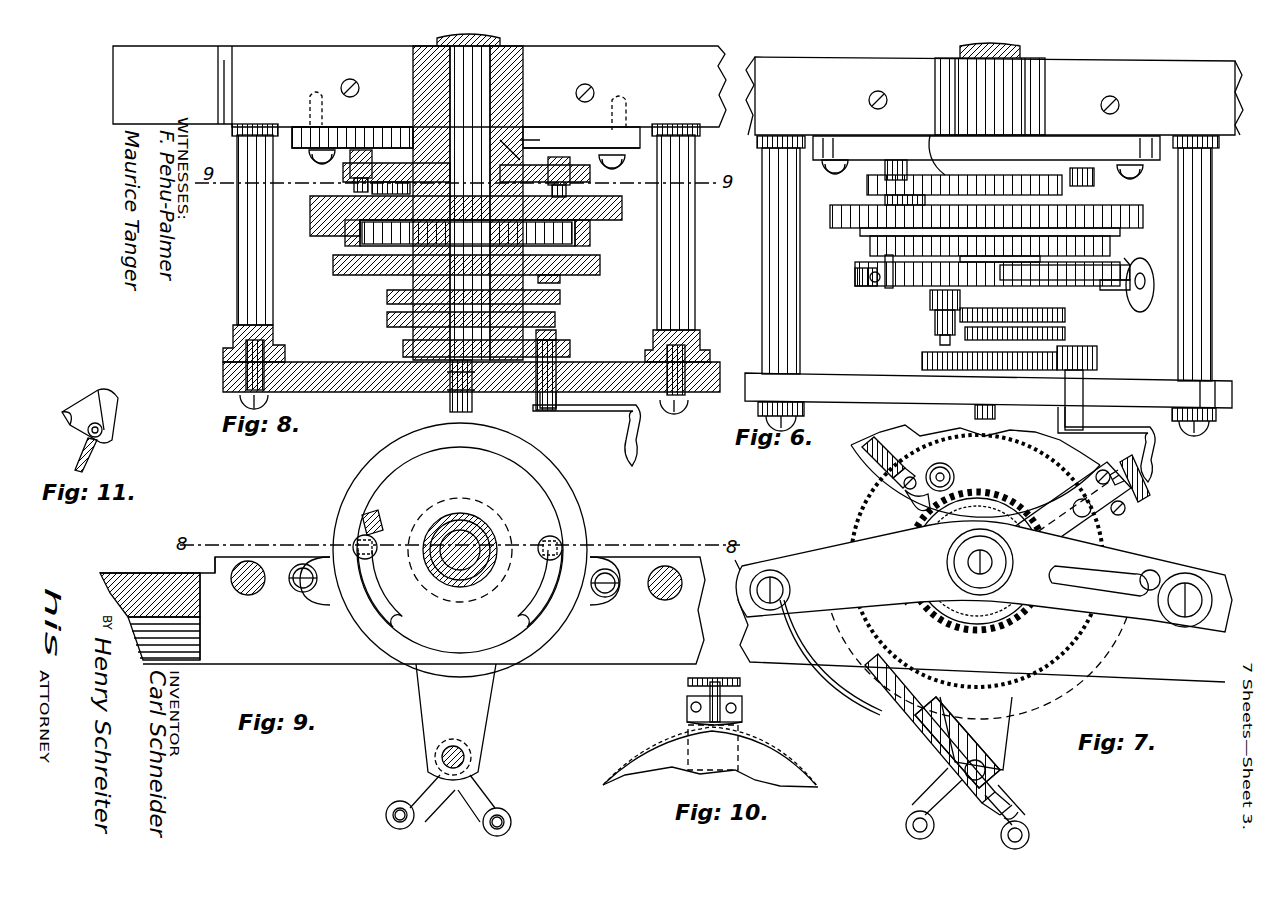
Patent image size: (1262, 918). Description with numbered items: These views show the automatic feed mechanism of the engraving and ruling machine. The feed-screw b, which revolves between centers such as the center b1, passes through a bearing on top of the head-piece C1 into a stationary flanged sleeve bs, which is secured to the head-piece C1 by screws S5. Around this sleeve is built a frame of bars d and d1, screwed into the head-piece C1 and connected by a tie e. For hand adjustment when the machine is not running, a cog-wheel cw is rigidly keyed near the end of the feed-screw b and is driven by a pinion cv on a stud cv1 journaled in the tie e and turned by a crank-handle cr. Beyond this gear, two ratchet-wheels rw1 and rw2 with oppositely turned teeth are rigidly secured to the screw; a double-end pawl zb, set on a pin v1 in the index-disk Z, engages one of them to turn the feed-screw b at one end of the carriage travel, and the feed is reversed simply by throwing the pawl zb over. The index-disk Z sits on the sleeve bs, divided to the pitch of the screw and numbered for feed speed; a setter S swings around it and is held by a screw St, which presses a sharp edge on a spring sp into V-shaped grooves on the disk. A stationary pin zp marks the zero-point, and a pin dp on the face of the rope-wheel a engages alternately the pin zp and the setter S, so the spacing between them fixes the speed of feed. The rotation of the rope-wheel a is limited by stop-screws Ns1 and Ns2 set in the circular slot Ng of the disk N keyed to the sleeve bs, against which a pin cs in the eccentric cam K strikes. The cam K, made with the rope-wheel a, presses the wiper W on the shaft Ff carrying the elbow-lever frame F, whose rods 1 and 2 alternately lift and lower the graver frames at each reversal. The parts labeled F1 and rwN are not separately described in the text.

In FIG. 8, the head-piece C1 is at (419, 88).
In FIG. 6, the head-piece C1 is at (994, 96).
In FIG. 8, the frame plate F1 is at (466, 140).
In FIG. 6, the frame plate F1 is at (862, 148).
In FIG. 9, the frame plate F1 is at (456, 722).
In FIG. 7, the frame plate F1 is at (976, 733).
In FIG. 8, the stationary flanged sleeve bs is at (525, 150).
In FIG. 6, the stationary flanged sleeve bs is at (925, 146).
In FIG. 8, the stop-screw Ns1 is at (378, 146).
In FIG. 6, the stop-screw Ns1 is at (905, 152).
In FIG. 9, the stop-screw Ns1 is at (355, 540).
In FIG. 8, the stop-screw Ns2 is at (566, 160).
In FIG. 6, the stop-screw Ns2 is at (1095, 156).
In FIG. 9, the stop-screw Ns2 is at (560, 545).
In FIG. 8, the screws S5 is at (332, 162).
In FIG. 6, the screws S5 is at (867, 182).
In FIG. 9, the screws S5 is at (303, 592).
In FIG. 8, the disk N is at (343, 172).
In FIG. 6, the disk N is at (964, 185).
In FIG. 9, the disk N is at (460, 550).
In FIG. 9, the circular slot Ng is at (460, 534).
In FIG. 8, the pin cs is at (391, 189).
In FIG. 6, the pin cs is at (910, 200).
In FIG. 9, the pin cs is at (366, 518).
In FIG. 8, the eccentric cam K is at (618, 213).
In FIG. 6, the eccentric cam K is at (1143, 218).
In FIG. 7, the eccentric cam K is at (1120, 530).
In FIG. 8, the rope-wheel a is at (580, 238).
In FIG. 6, the rope-wheel a is at (1110, 244).
In FIG. 8, the index-disk Z is at (596, 266).
In FIG. 6, the index-disk Z is at (905, 286).
In FIG. 7, the index-disk Z is at (977, 561).
In FIG. 10, the index-disk Z is at (634, 758).
In FIG. 8, the feed-screw b is at (468, 197).
In FIG. 6, the feed-screw b is at (990, 89).
In FIG. 8, the center b1 is at (452, 410).
In FIG. 6, the center b1 is at (975, 413).
In FIG. 7, the center b1 is at (968, 561).
In FIG. 8, the ratchet-wheel rw1 is at (390, 319).
In FIG. 6, the ratchet-wheel rw1 is at (1032, 336).
In FIG. 8, the ratchet-wheel rw2 is at (390, 297).
In FIG. 6, the ratchet-wheel rw2 is at (1065, 316).
In FIG. 7, the ratchet wheel rwN is at (1022, 615).
In FIG. 8, the cog-wheel cw is at (403, 348).
In FIG. 6, the cog-wheel cw is at (922, 360).
In FIG. 7, the cog-wheel cw is at (977, 581).
In FIG. 8, the pinion cv is at (560, 350).
In FIG. 6, the pinion cv is at (1097, 362).
In FIG. 8, the stud cv1 is at (545, 402).
In FIG. 8, the crank-handle cr is at (590, 414).
In FIG. 6, the crank-handle cr is at (1122, 422).
In FIG. 7, the crank-handle cr is at (1104, 581).
In FIG. 8, the bar d is at (682, 313).
In FIG. 6, the bar d is at (1210, 345).
In FIG. 9, the bar d is at (662, 600).
In FIG. 8, the bar d1 is at (240, 318).
In FIG. 6, the bar d1 is at (800, 330).
In FIG. 9, the bar d1 is at (247, 596).
In FIG. 8, the tie e is at (352, 380).
In FIG. 6, the tie e is at (988, 390).
In FIG. 9, the tie e is at (402, 610).
In FIG. 7, the tie e is at (984, 576).
In FIG. 9, the elbow-lever frame F is at (488, 797).
In FIG. 7, the elbow-lever frame F is at (952, 808).
In FIG. 7, the shaft Ff is at (1000, 768).
In FIG. 9, the rod 1 is at (388, 815).
In FIG. 9, the rod 2 is at (484, 822).
In FIG. 6, the pin dp is at (885, 262).
In FIG. 7, the pin dp is at (897, 468).
In FIG. 6, the stationary pin zp is at (855, 276).
In FIG. 7, the stationary pin zp is at (862, 455).
In FIG. 6, the double-end pawl zb is at (928, 338).
In FIG. 7, the double-end pawl zb is at (925, 493).
In FIG. 11, the double-end pawl zb is at (100, 445).
In FIG. 6, the screw St is at (1140, 300).
In FIG. 7, the screw St is at (1150, 490).
In FIG. 10, the screw St is at (742, 684).
In FIG. 7, the pin v1 is at (954, 474).
In FIG. 7, the setter S is at (1057, 518).
In FIG. 7, the wiper W is at (922, 715).
In FIG. 10, the spring sp is at (744, 720).